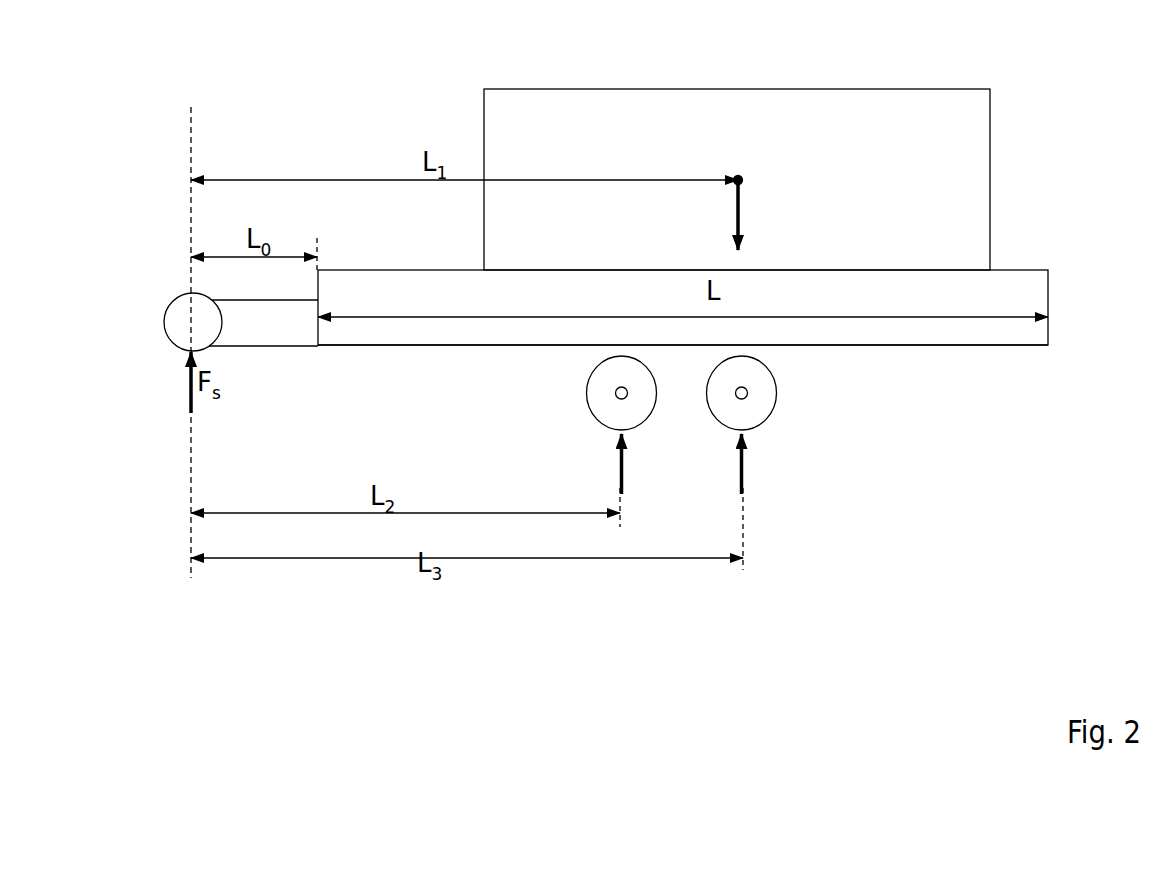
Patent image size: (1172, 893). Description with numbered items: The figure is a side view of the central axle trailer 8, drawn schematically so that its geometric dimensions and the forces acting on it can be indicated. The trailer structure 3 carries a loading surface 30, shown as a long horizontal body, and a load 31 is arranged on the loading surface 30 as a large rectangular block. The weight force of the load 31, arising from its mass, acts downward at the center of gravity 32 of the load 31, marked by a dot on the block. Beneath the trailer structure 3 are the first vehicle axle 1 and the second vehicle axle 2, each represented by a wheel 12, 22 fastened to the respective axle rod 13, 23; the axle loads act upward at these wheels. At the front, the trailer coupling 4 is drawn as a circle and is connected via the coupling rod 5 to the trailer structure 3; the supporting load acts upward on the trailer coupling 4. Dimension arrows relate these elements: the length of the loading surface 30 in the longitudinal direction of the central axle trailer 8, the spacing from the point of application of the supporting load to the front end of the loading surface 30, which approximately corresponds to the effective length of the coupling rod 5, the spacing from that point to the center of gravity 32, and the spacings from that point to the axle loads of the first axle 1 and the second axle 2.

The central axle trailer 8 is at (356, 98).
The trailer coupling 4 is at (172, 312).
The coupling rod 5 is at (292, 347).
The loading surface 30 is at (1016, 268).
The load 31 is at (992, 122).
The center of gravity 32 is at (740, 178).
The trailer structure 3 is at (937, 347).
The first vehicle axle 1 is at (574, 398).
The axle rod 13 is at (627, 391).
The wheel 12 is at (633, 428).
The second vehicle axle 2 is at (781, 408).
The axle rod 23 is at (747, 391).
The wheel 22 is at (753, 428).